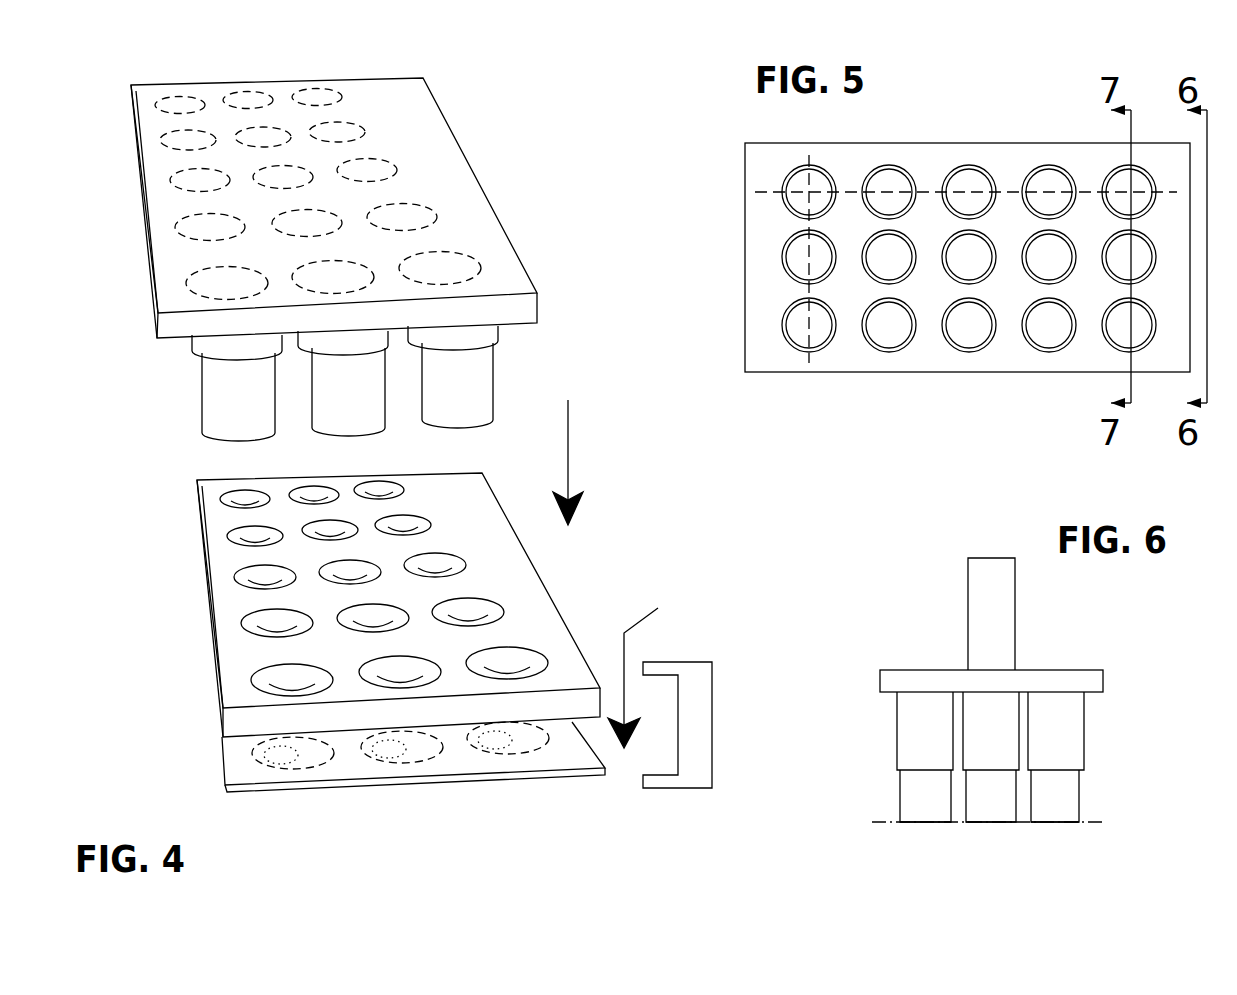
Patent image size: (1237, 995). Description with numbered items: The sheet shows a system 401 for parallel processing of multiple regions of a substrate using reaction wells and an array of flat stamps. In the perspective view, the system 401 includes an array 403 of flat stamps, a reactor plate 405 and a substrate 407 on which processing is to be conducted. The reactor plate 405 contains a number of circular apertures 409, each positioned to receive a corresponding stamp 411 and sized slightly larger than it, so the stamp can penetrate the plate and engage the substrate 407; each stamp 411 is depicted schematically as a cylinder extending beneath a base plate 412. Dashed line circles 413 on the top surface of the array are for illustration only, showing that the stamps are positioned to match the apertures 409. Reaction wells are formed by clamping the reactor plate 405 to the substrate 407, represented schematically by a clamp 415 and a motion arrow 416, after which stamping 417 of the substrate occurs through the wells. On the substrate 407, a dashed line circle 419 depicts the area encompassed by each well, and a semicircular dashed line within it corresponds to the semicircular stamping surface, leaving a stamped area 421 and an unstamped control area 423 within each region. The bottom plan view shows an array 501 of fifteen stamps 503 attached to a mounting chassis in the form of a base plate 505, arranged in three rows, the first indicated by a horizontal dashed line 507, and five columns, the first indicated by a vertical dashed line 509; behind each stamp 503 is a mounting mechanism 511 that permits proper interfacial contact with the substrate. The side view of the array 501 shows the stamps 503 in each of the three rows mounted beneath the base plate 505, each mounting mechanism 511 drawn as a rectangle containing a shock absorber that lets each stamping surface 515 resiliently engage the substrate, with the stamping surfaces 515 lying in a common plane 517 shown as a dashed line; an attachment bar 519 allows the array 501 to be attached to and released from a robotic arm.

In FIG. 4, the system 401 is at (566, 166).
In FIG. 4, the array of flat stamps 403 is at (305, 208).
In FIG. 4, the reactor plate 405 is at (197, 520).
In FIG. 4, the substrate 407 is at (222, 786).
In FIG. 4, the apertures 409 is at (248, 488).
In FIG. 4, the stamp 411 is at (418, 427).
In FIG. 4, the base plate 412 is at (150, 297).
In FIG. 4, the dashed line circles 413 is at (183, 93).
In FIG. 4, the clamp 415 is at (693, 662).
In FIG. 4, the motion arrow 416 is at (654, 668).
In FIG. 4, the stamping 417 is at (570, 438).
In FIG. 4, the dashed line circle 419 is at (416, 790).
In FIG. 4, the stamped area 421 is at (283, 757).
In FIG. 4, the unstamped control area 423 is at (305, 753).
In FIG. 5, the array 501 is at (936, 234).
In FIG. 6, the array 501 is at (998, 729).
In FIG. 5, the stamps 503 is at (923, 259).
In FIG. 6, the stamps 503 is at (910, 812).
In FIG. 5, the base plate 505 is at (765, 141).
In FIG. 6, the base plate 505 is at (1097, 692).
In FIG. 5, the horizontal dashed line 507 is at (757, 192).
In FIG. 5, the vertical dashed line 509 is at (810, 155).
In FIG. 5, the mounting mechanism 511 is at (782, 252).
In FIG. 6, the mounting mechanism 511 is at (1083, 758).
In FIG. 5, the stamping surface 515 is at (802, 265).
In FIG. 6, the stamping surface 515 is at (973, 822).
In FIG. 6, the common plane 517 is at (878, 822).
In FIG. 6, the attachment bar 519 is at (967, 618).